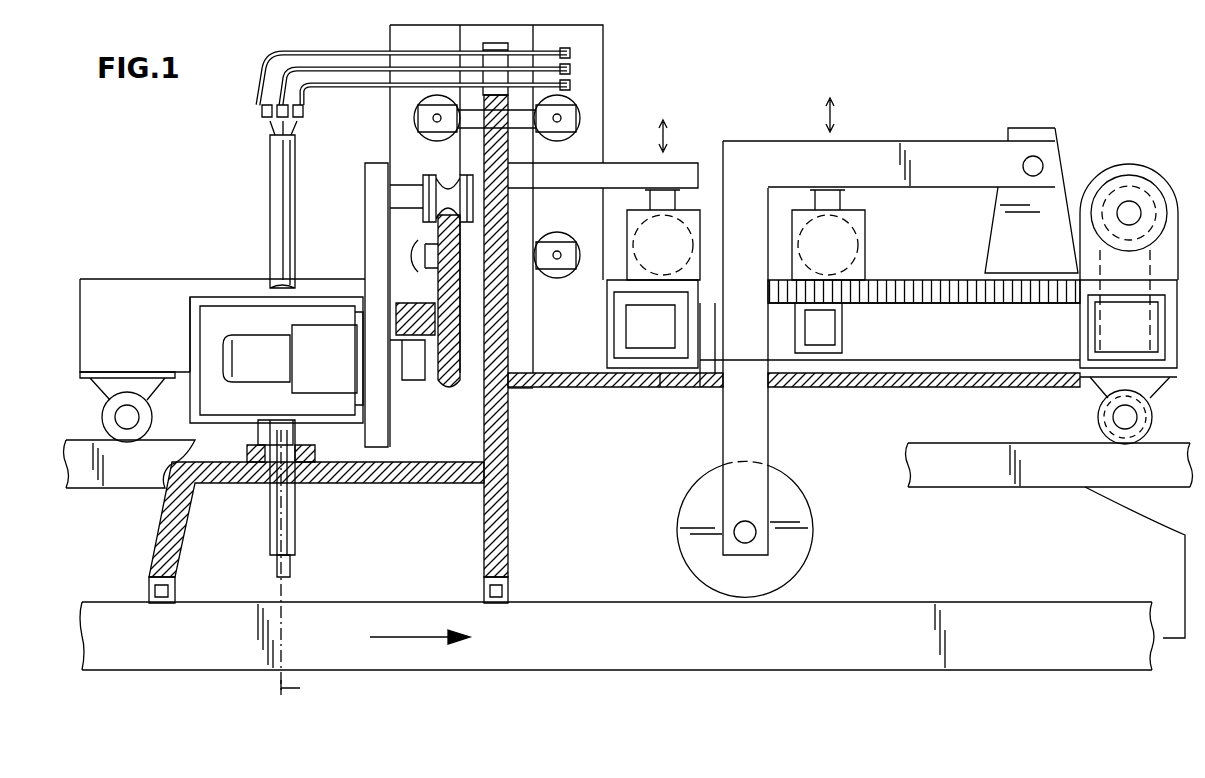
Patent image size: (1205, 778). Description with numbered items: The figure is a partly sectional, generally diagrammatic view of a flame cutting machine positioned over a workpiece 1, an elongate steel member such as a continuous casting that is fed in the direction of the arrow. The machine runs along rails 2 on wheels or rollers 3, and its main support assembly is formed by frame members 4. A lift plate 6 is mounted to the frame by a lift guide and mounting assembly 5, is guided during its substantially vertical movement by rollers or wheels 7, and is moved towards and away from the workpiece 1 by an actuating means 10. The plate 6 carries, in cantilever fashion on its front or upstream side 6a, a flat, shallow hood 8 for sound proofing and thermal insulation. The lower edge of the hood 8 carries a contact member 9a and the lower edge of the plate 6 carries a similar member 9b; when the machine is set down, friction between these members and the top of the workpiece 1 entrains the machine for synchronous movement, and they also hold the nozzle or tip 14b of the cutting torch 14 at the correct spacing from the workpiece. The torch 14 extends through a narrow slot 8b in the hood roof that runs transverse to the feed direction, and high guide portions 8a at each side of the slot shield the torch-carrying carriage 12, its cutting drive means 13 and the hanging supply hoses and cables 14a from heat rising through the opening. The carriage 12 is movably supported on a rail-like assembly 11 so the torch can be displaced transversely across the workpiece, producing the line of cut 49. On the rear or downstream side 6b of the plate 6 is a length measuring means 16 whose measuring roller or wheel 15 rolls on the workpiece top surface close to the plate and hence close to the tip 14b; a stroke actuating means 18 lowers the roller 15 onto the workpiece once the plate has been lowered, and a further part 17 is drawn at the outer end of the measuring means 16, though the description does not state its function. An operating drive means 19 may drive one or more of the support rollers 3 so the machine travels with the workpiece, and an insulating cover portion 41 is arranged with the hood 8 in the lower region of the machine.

The workpiece 1 is at (192, 661).
The rails 2 is at (74, 488).
The wheels or rollers 3 is at (102, 418).
The frame members 4 is at (108, 281).
The lift guide and mounting assembly 5 is at (600, 49).
The lift plate 6 is at (508, 530).
The front or upstream side 6a is at (482, 393).
The rear or downstream side 6b is at (510, 391).
The rollers or wheels 7 is at (582, 118).
The hood 8 is at (163, 513).
The guide portions 8a is at (247, 449).
The slot 8b is at (270, 493).
The contact member 9a is at (149, 588).
The contact member 9b is at (508, 588).
The actuating means 10 is at (624, 232).
The rail-like assembly 11 is at (438, 388).
The torch-carrying carriage 12 is at (365, 246).
The cutting drive means 13 is at (235, 336).
The cutting torch 14 is at (256, 150).
The supply hoses and cables 14a is at (254, 83).
The nozzle or tip 14b is at (290, 570).
The measuring roller or wheel 15 is at (808, 528).
The length measuring means 16 is at (876, 152).
The stop 17 is at (1044, 132).
The stroke actuating means 18 is at (860, 242).
The operating drive means 19 is at (1130, 186).
The insulating cover portion 41 is at (1166, 638).
The line of cut 49 is at (302, 688).